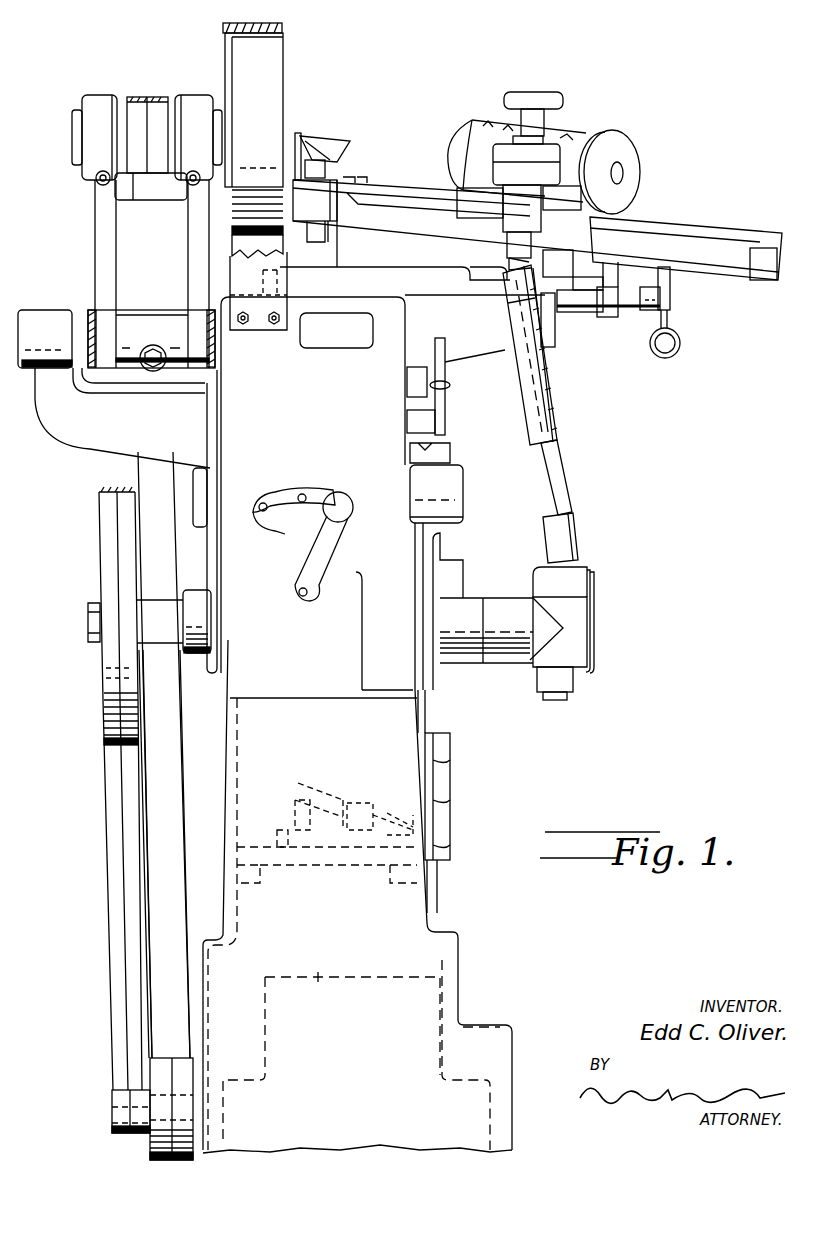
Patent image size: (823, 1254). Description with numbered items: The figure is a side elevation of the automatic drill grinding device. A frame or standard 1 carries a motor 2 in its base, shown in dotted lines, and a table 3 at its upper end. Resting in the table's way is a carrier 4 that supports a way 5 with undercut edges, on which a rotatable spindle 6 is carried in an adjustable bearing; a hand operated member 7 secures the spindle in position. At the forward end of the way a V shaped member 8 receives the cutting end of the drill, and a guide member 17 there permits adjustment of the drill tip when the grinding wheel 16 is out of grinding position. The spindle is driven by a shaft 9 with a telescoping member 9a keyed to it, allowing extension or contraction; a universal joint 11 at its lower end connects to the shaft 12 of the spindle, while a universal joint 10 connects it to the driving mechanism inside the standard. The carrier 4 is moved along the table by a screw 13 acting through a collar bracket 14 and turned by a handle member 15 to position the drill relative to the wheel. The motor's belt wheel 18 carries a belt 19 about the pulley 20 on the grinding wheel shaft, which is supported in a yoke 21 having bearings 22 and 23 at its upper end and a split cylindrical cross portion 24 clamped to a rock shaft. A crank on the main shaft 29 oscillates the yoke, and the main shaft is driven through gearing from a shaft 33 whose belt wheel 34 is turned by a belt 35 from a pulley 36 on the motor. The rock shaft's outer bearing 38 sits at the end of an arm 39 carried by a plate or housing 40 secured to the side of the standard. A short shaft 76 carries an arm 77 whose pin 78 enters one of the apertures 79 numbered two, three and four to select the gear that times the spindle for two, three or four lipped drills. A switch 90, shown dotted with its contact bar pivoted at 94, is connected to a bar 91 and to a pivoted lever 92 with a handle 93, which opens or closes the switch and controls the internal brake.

The frame or standard 1 is at (398, 861).
The motor 2 is at (331, 1037).
The table 3 is at (383, 435).
The carrier 4 is at (535, 224).
The way 5 is at (722, 218).
The rotatable spindle 6 is at (544, 167).
The motor handle 7 is at (540, 96).
The V shaped member 8 is at (338, 140).
The shaft 9 is at (560, 458).
The telescoping member 9a is at (552, 387).
The universal joint 10 is at (584, 563).
The universal joint 11 is at (496, 260).
The shaft of the spindle 12 is at (535, 240).
The screw 13 is at (576, 312).
The collar bracket 14 is at (610, 318).
The handle member 15 is at (675, 332).
The grinding wheel 16 is at (255, 176).
The guide member 17 is at (298, 133).
The belt wheel 18 is at (163, 1055).
The belt 19 is at (164, 854).
The pulley 20 is at (151, 148).
The yoke 21 is at (116, 297).
The bearing 22 is at (94, 140).
The bearing 23 is at (198, 140).
The cylindrical cross portion 24 is at (151, 340).
The main shaft 29 is at (193, 495).
The shaft 33 is at (88, 620).
The belt wheel 34 is at (104, 694).
The belt 35 is at (112, 870).
The pulley 36 is at (118, 1108).
The bearing 38 is at (45, 339).
The arm 39 is at (122, 418).
The plate or housing 40 is at (214, 430).
The short shaft 76 is at (300, 600).
The arm 77 is at (320, 570).
The pin 78 is at (352, 505).
The apertures 79 is at (300, 507).
The switch 90 is at (290, 832).
The bar 91 is at (440, 712).
The pivoted lever 92 is at (450, 397).
The handle 93 is at (446, 345).
The pivot of contact bar 94 is at (350, 805).